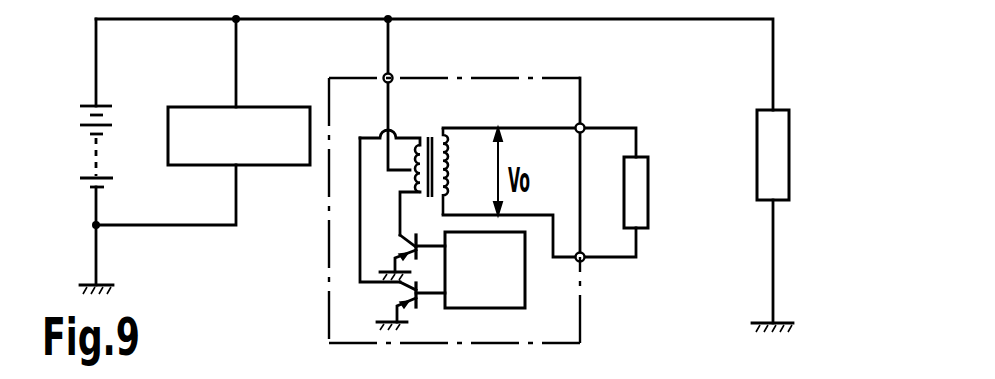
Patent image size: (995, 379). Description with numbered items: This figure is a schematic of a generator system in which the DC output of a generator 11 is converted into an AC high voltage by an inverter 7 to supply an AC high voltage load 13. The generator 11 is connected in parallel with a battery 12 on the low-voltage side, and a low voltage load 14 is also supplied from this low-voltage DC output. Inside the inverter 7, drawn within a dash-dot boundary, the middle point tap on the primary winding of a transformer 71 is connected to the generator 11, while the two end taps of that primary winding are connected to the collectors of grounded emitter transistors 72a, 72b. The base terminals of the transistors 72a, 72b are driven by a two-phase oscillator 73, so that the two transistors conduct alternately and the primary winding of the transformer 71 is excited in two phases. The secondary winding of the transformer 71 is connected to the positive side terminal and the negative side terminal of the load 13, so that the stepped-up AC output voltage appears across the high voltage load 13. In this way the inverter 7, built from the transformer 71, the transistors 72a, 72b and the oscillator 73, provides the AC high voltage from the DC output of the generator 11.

The inverter 7 is at (580, 318).
The generator 11 is at (262, 107).
The battery 12 is at (103, 106).
The high voltage load 13 is at (641, 182).
The low voltage load 14 is at (784, 172).
The transformer 71 is at (433, 128).
The transistor 72a is at (395, 257).
The transistor 72b is at (400, 302).
The two-phase oscillator 73 is at (525, 284).